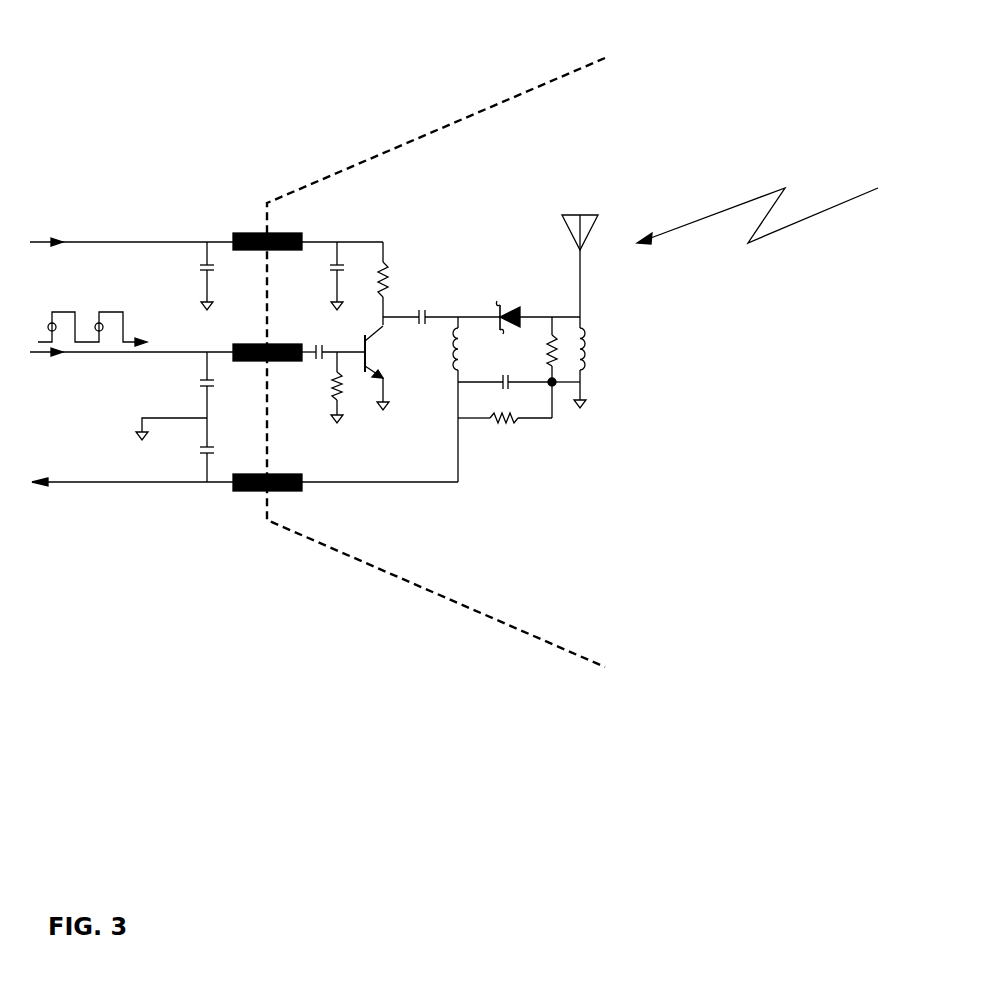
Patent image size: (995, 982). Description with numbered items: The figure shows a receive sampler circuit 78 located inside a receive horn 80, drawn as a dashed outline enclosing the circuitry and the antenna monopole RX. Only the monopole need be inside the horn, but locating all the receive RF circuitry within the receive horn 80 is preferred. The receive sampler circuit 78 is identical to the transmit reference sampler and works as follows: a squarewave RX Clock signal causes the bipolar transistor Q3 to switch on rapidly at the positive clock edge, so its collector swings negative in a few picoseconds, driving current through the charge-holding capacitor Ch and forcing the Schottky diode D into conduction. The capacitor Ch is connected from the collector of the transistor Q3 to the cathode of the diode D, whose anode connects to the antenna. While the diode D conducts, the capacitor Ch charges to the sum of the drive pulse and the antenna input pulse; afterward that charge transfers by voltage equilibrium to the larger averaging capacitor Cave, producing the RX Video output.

The receive horn 80 is at (422, 130).
The receive sampler circuit 78 is at (454, 395).
The bipolar transistor Q3 is at (390, 368).
The Schottky diode D is at (510, 305).
The charge-holding capacitor Ch is at (420, 301).
The averaging capacitor Cave is at (505, 367).